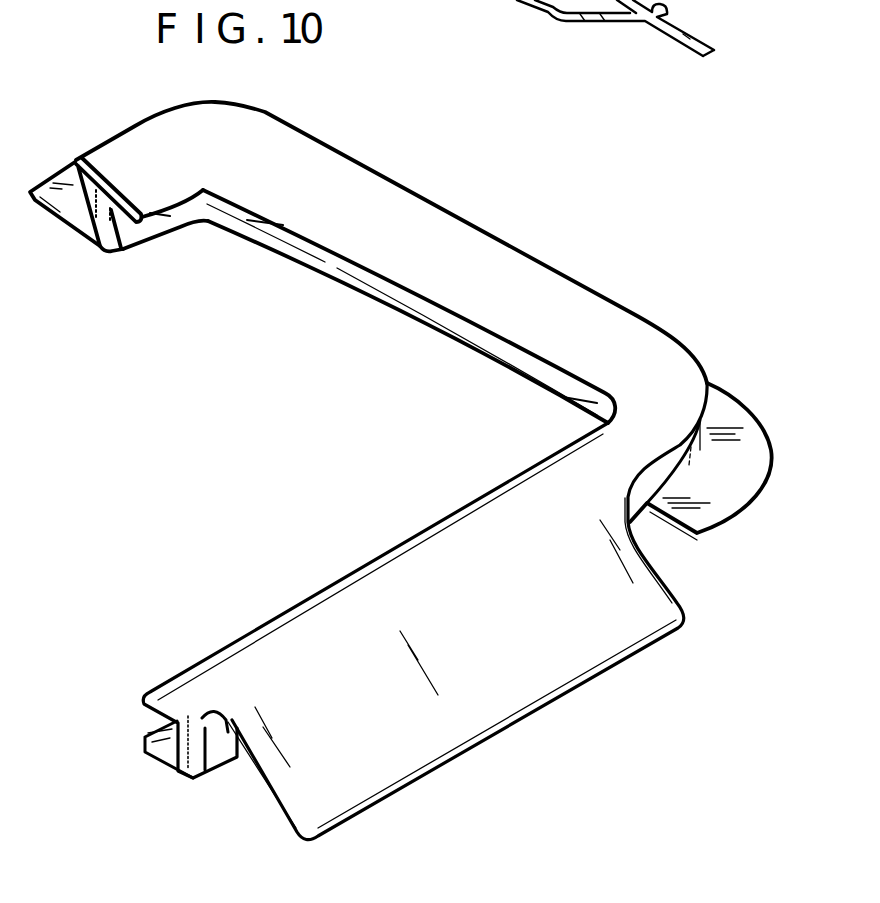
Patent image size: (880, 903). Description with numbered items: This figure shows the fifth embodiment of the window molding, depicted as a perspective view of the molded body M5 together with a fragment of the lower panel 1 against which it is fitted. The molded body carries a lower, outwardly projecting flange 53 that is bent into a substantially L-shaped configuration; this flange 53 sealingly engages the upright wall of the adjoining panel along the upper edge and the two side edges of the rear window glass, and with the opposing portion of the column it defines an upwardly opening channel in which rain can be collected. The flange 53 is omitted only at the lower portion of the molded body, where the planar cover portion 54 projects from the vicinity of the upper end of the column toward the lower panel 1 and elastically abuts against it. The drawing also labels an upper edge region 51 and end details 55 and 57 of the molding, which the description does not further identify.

The upper arm of mounting frame 51 is at (463, 228).
The flange 53 is at (46, 210).
The planar cover portion 54 is at (494, 702).
The slanted engaging plate 55 is at (111, 250).
The connecting tab 57 is at (133, 233).
The rolled edge rib M5 is at (322, 278).
The lower panel 1 is at (500, 1).